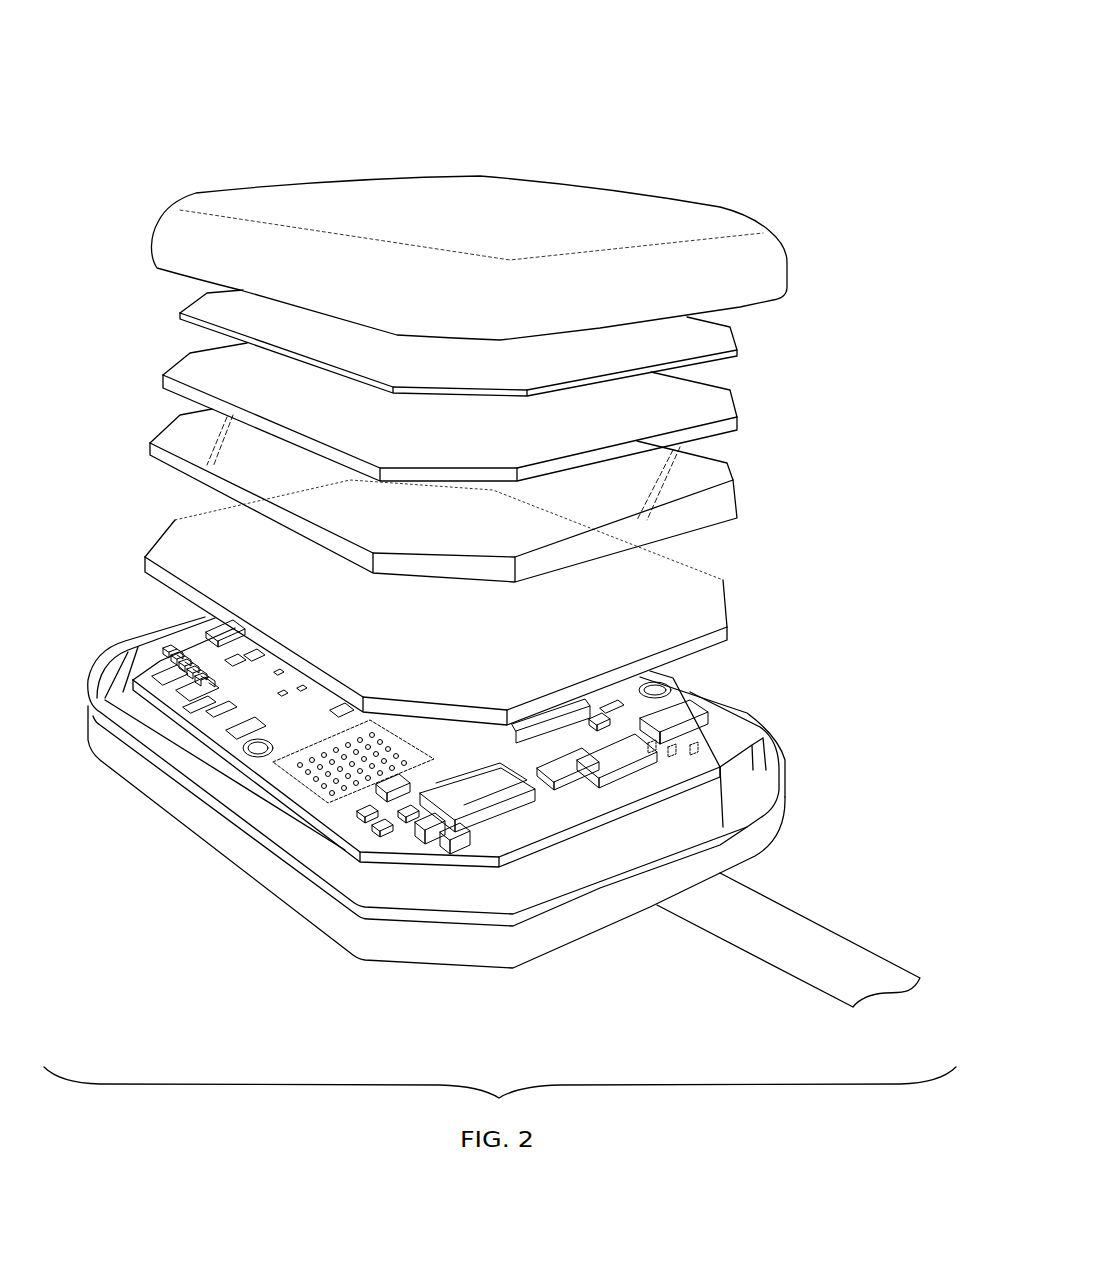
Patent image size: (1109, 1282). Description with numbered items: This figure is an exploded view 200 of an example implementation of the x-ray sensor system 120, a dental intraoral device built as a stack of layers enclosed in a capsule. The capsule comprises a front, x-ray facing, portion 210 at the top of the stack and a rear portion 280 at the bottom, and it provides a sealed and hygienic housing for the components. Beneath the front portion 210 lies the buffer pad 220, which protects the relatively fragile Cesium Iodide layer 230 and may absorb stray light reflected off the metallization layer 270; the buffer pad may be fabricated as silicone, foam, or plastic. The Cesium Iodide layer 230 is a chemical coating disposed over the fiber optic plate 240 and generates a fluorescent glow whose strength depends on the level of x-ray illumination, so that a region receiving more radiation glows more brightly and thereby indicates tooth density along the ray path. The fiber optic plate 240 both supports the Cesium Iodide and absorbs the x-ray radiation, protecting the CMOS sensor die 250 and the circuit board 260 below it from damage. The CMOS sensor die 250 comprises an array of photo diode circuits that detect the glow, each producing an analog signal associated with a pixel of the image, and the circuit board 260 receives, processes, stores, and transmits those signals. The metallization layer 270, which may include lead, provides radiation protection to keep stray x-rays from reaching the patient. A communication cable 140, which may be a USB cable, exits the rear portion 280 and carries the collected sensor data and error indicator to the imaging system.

The exploded view 200 is at (718, 70).
The x-ray sensor system 120 is at (330, 172).
The front, x-ray facing, portion 210 is at (760, 258).
The buffer pad 220 is at (720, 338).
The Cesium Iodide layer 230 is at (718, 405).
The fiber optic plate 240 is at (717, 492).
The CMOS sensor die 250 is at (726, 603).
The circuit board 260 is at (338, 818).
The metallization layer 270 is at (697, 804).
The rear portion 280 is at (413, 933).
The communication cable 140 is at (787, 927).